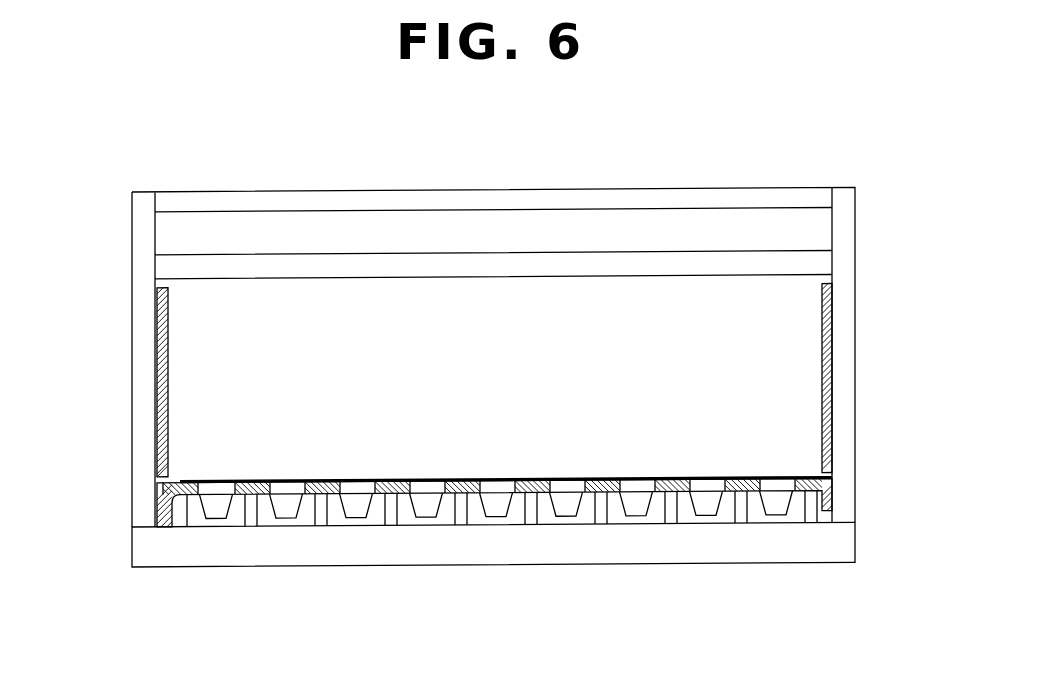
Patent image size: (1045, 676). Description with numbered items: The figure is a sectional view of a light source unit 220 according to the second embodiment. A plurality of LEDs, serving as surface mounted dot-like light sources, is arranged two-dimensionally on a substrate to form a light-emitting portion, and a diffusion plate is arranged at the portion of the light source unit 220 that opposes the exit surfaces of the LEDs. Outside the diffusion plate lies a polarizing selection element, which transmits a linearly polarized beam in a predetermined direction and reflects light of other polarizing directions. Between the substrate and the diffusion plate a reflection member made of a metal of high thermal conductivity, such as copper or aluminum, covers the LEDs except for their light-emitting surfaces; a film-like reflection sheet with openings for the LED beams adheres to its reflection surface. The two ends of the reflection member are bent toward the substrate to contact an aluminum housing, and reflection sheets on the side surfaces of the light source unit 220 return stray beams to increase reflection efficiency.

The light source unit 220 is at (248, 141).